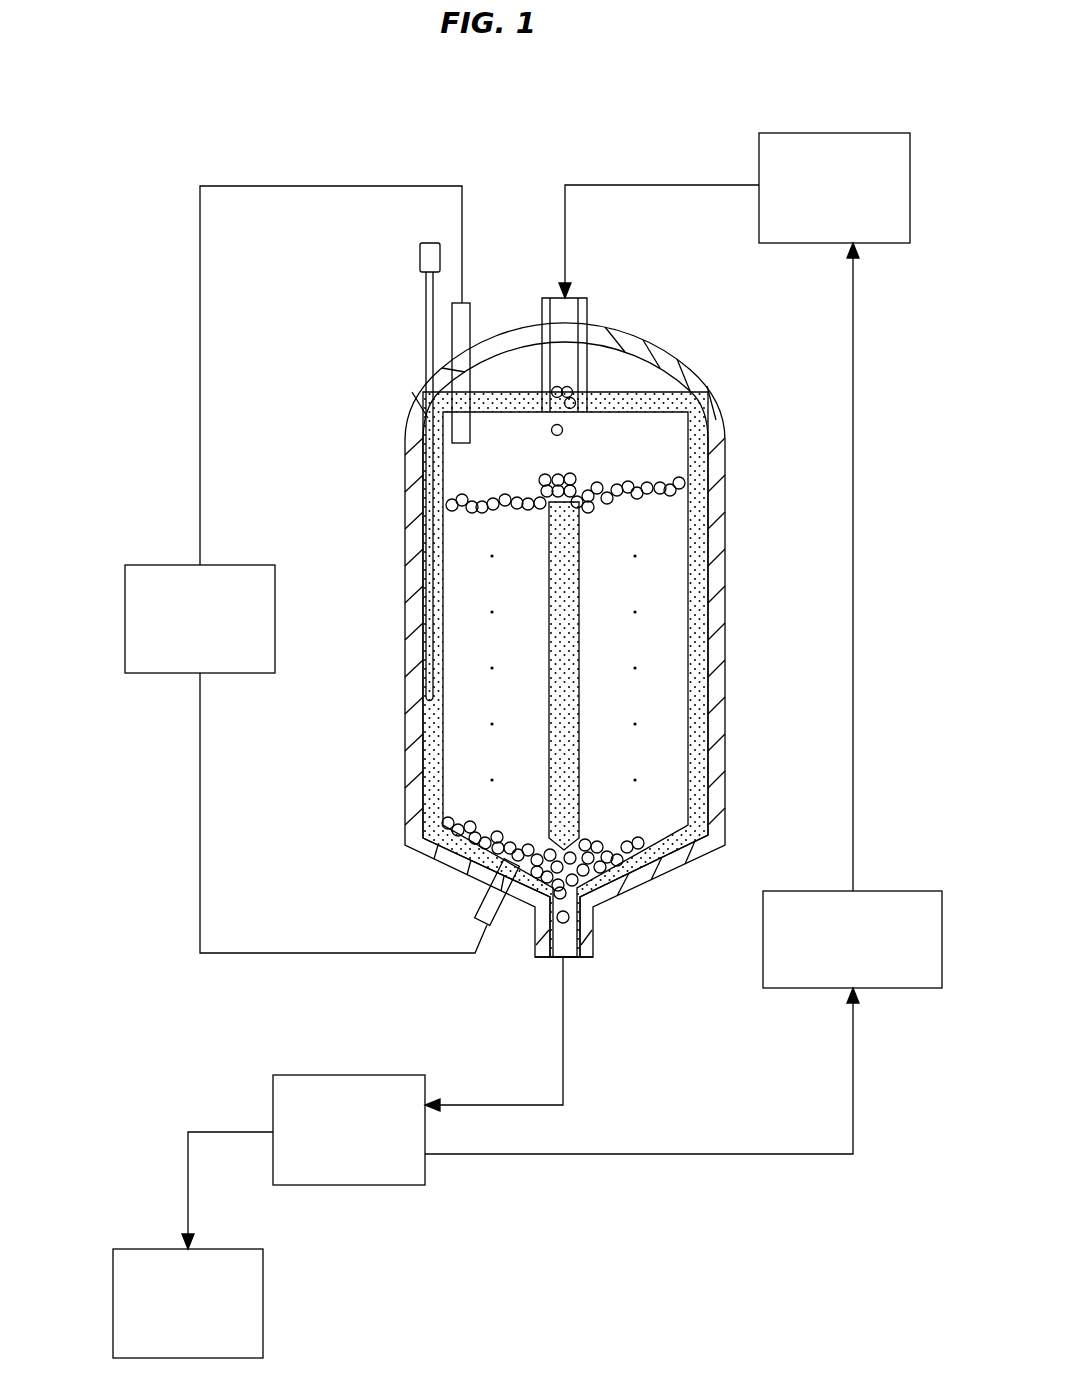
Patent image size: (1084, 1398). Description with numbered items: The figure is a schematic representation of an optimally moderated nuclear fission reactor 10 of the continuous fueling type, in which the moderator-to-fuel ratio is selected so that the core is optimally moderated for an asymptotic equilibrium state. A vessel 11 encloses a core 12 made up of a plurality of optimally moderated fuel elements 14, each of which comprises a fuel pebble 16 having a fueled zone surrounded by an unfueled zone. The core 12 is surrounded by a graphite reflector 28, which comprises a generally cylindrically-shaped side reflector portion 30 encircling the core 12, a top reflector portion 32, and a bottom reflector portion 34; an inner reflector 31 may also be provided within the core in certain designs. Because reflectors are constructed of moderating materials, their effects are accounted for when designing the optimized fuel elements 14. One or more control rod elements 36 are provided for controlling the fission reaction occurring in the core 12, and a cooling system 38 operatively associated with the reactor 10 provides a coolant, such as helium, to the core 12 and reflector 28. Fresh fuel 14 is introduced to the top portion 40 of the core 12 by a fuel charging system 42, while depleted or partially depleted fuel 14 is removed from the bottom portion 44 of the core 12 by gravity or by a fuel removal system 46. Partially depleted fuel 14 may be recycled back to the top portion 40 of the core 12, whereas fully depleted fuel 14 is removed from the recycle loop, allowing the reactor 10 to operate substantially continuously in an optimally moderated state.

The optimally moderated nuclear fission reactor 10 is at (152, 128).
The vessel 11 is at (745, 517).
The core 12 is at (667, 608).
The optimally moderated fuel element 14 is at (476, 494).
The fuel pebble 16 is at (545, 483).
The graphite reflector 28 is at (724, 703).
The side reflector portion 30 is at (712, 597).
The inner reflector 31 is at (580, 584).
The top reflector portion 32 is at (648, 390).
The bottom reflector portion 34 is at (673, 860).
The control rod element 36 is at (427, 292).
The cooling system 38 is at (125, 618).
The top portion of the core 40 is at (596, 435).
The fuel charging system 42 is at (885, 133).
The bottom portion of the core 44 is at (543, 867).
The fuel removal system 46 is at (315, 1075).